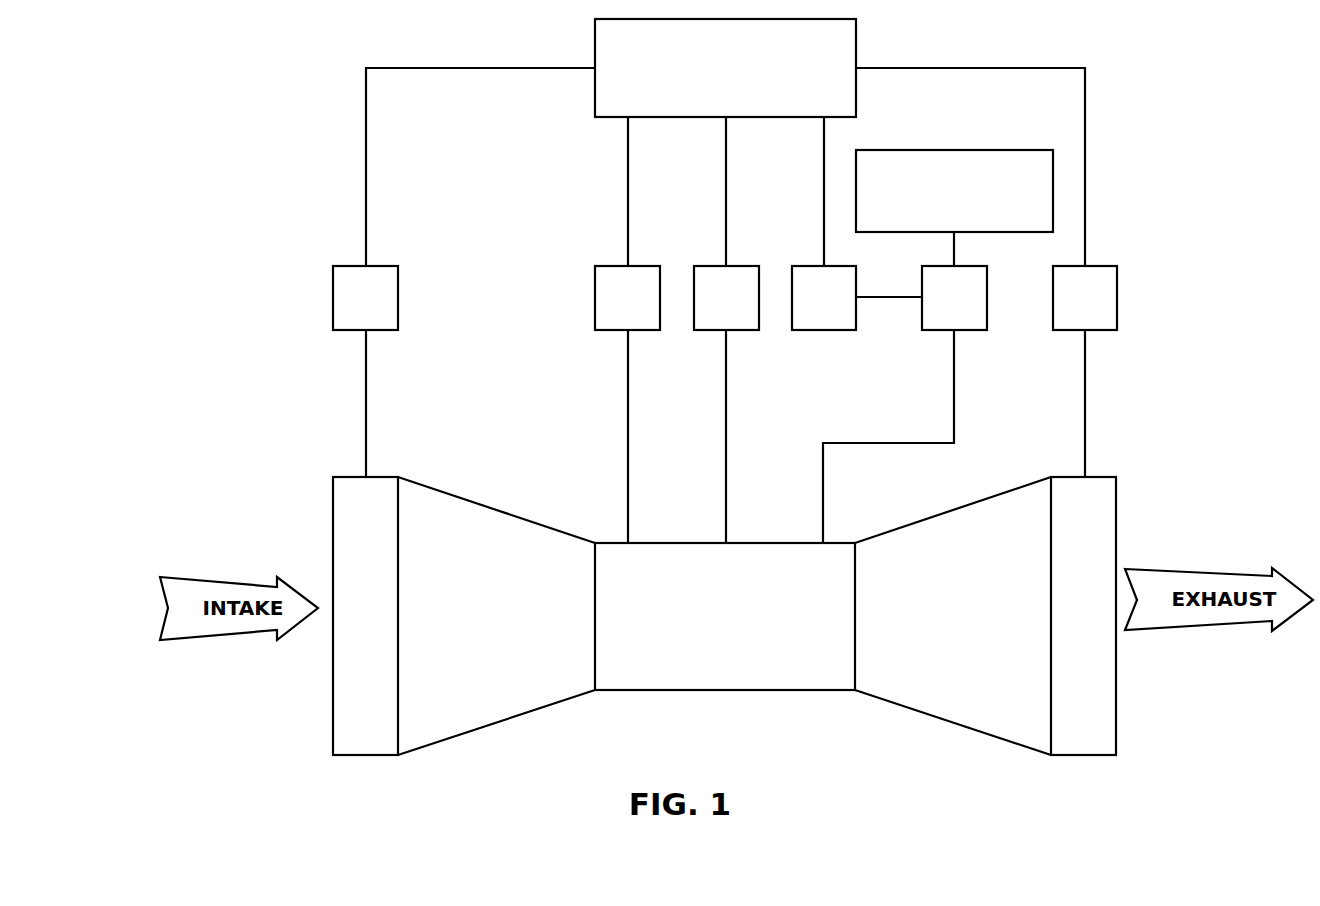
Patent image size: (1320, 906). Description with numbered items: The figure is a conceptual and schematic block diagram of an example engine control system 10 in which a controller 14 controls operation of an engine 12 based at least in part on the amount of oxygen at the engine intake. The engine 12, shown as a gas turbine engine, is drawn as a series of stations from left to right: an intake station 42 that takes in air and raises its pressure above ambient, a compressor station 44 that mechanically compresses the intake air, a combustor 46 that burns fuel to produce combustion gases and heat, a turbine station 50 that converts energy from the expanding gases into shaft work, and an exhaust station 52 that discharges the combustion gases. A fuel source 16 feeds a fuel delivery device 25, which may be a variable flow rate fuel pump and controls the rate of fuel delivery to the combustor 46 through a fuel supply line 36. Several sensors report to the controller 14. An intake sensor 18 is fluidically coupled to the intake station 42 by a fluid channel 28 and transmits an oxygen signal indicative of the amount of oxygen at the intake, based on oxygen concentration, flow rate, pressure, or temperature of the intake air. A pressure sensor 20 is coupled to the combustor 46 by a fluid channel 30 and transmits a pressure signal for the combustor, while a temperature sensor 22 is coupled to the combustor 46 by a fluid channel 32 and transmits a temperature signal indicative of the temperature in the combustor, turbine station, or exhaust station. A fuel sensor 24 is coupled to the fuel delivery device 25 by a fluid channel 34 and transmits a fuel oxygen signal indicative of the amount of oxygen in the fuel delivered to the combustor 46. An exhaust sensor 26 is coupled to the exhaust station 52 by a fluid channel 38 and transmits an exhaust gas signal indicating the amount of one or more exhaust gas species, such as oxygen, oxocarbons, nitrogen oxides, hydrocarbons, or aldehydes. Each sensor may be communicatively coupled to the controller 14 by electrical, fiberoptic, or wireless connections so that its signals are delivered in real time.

The engine control system 10 is at (232, 72).
The engine 12 is at (315, 474).
The controller 14 is at (713, 92).
The fuel source 16 is at (942, 215).
The intake sensor 18 is at (354, 309).
The pressure sensor 20 is at (616, 309).
The temperature sensor 22 is at (714, 309).
The fuel sensor 24 is at (812, 309).
The fuel delivery device 25 is at (942, 309).
The exhaust sensor 26 is at (1073, 309).
The fluid channel 28 is at (366, 396).
The fluid channel 30 is at (628, 412).
The fluid channel 32 is at (726, 408).
The fluid channel 34 is at (910, 298).
The fuel supply line 36 is at (954, 423).
The fluid channel 38 is at (1085, 404).
The intake station 42 is at (333, 700).
The compressor station 44 is at (475, 730).
The combustor 46 is at (660, 690).
The turbine station 50 is at (937, 718).
The exhaust station 52 is at (1116, 697).